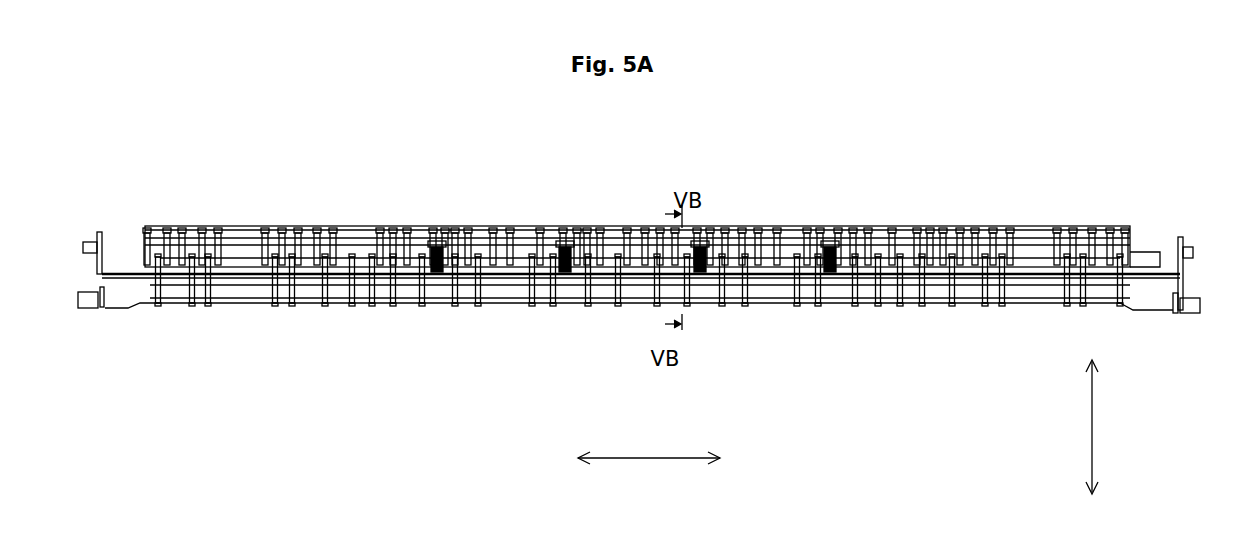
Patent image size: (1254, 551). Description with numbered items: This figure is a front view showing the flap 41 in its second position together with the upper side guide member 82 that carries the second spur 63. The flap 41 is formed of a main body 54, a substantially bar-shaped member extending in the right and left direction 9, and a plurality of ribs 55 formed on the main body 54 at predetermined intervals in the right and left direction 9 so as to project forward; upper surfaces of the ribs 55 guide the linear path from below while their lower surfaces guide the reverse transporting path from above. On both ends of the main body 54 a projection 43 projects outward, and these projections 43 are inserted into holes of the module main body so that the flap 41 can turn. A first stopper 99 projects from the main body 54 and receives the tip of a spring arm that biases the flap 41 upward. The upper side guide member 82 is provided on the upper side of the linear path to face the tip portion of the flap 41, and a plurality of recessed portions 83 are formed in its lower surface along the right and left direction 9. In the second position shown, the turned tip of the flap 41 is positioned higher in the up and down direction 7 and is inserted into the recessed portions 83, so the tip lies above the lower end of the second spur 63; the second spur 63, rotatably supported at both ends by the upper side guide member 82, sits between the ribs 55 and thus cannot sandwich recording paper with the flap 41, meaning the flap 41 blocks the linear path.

The up and down direction 7 is at (1092, 430).
The right and left direction 9 is at (648, 459).
The flap 41 is at (937, 350).
The projection 43 is at (78, 304).
The main body 54 is at (123, 304).
The rib 55 is at (195, 226).
The second spur 63 is at (438, 306).
The upper side guide member 82 is at (240, 226).
The recessed portion 83 is at (198, 306).
The first stopper 99 is at (88, 240).